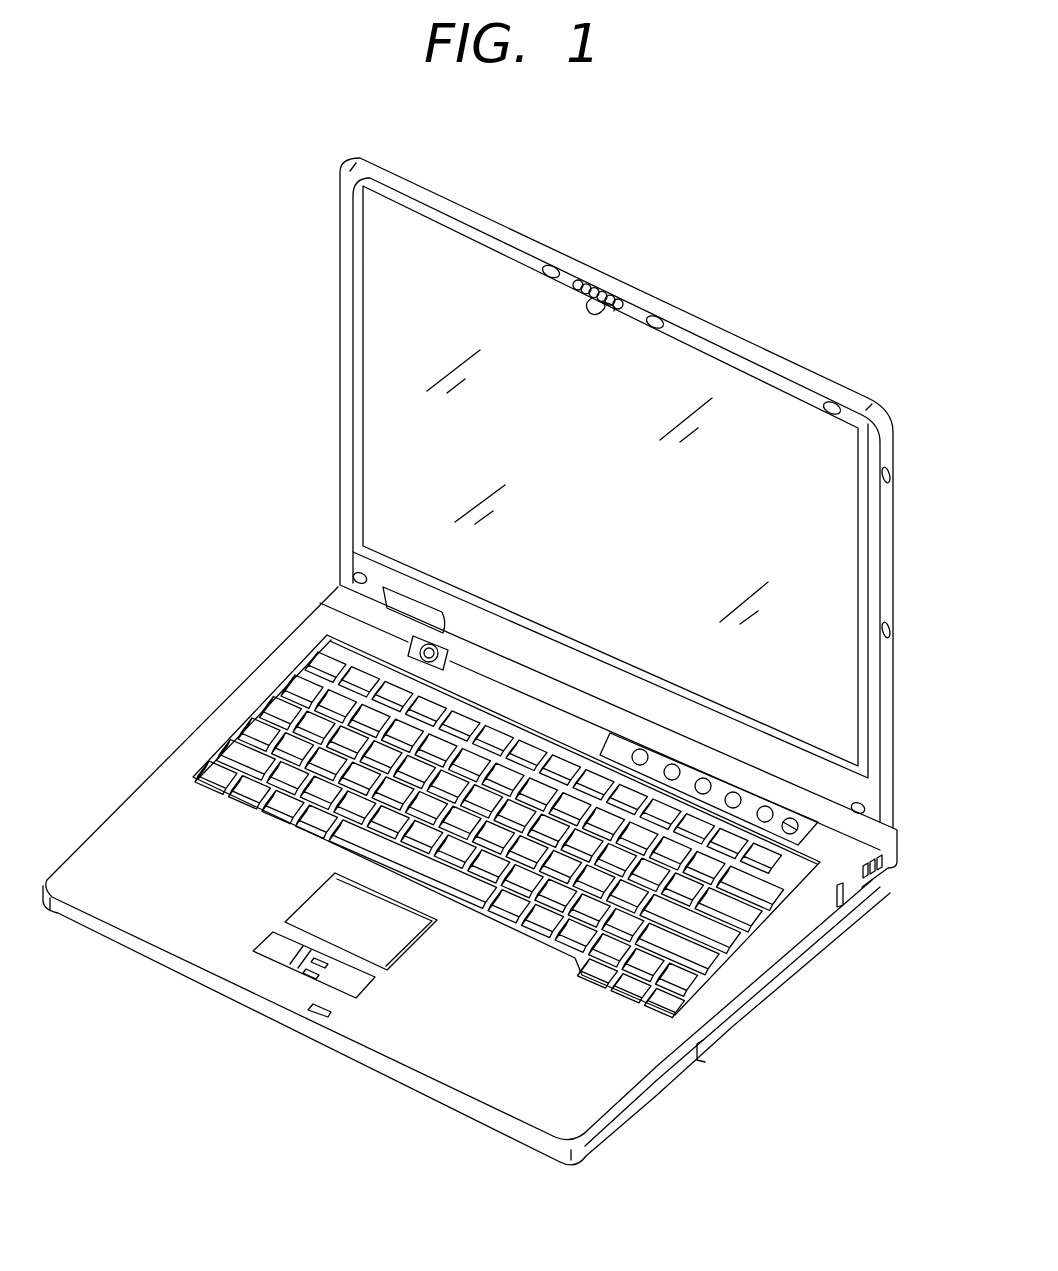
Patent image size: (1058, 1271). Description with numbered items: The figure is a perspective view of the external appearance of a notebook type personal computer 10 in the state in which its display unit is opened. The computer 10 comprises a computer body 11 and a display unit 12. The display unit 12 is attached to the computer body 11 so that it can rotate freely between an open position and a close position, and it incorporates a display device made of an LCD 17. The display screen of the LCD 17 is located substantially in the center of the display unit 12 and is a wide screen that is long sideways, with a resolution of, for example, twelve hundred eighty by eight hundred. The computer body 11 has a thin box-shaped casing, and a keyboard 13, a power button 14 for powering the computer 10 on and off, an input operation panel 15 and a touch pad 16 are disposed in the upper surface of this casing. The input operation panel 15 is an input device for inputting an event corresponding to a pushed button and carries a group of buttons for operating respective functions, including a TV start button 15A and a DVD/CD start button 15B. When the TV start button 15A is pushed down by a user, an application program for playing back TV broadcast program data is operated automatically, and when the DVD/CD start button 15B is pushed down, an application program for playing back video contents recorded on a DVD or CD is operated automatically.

The notebook type personal computer 10 is at (506, 661).
The computer body 11 is at (660, 1090).
The display unit 12 is at (655, 493).
The keyboard 13 is at (717, 968).
The power button 14 is at (413, 646).
The input operation panel 15 is at (709, 747).
The TV start button 15A is at (642, 748).
The DVD/CD start button 15B is at (676, 763).
The touch pad 16 is at (330, 920).
The LCD 17 is at (833, 512).